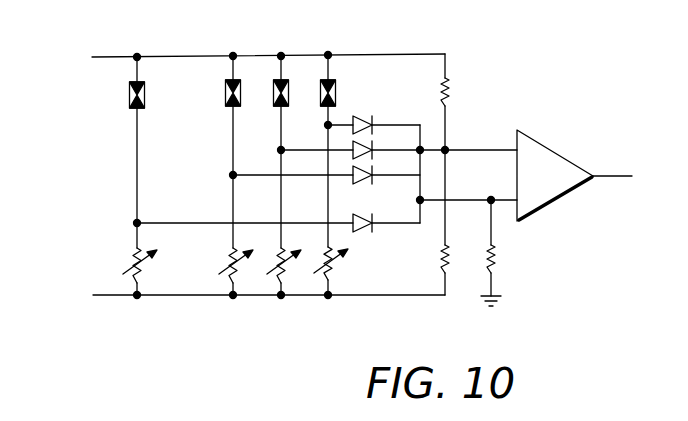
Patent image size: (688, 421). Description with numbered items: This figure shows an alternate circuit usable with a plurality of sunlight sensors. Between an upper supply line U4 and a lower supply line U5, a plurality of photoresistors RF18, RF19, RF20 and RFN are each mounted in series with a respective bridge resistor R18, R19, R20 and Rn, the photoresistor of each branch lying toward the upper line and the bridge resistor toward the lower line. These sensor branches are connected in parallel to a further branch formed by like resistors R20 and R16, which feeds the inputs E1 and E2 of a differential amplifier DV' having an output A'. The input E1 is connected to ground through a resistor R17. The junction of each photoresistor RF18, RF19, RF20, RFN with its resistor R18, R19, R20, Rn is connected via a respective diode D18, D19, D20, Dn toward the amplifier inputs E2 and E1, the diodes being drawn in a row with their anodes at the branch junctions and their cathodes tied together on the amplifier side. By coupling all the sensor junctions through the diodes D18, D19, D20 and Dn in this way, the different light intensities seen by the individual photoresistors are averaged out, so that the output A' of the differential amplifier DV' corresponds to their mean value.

The positive supply voltage + U4 is at (239, 57).
The negative supply voltage - U5 is at (240, 295).
The photoresistor RFN is at (130, 69).
The photoresistor RF20 is at (224, 68).
The photoresistor RF19 is at (282, 68).
The photoresistor RF18 is at (331, 68).
The resistor R20 is at (463, 80).
The bridge resistor Rn is at (139, 285).
The bridge resistor R19 is at (282, 285).
The bridge resistor R18 is at (330, 285).
The diode D18 is at (374, 122).
The diode D19 is at (350, 147).
The diode D20 is at (326, 171).
The diode Dn is at (278, 219).
The input E2 is at (468, 141).
The input E1 is at (468, 190).
The resistor R16 is at (440, 262).
The resistor R17 is at (515, 250).
The differential amplifier DV is at (577, 146).
The output A is at (612, 166).